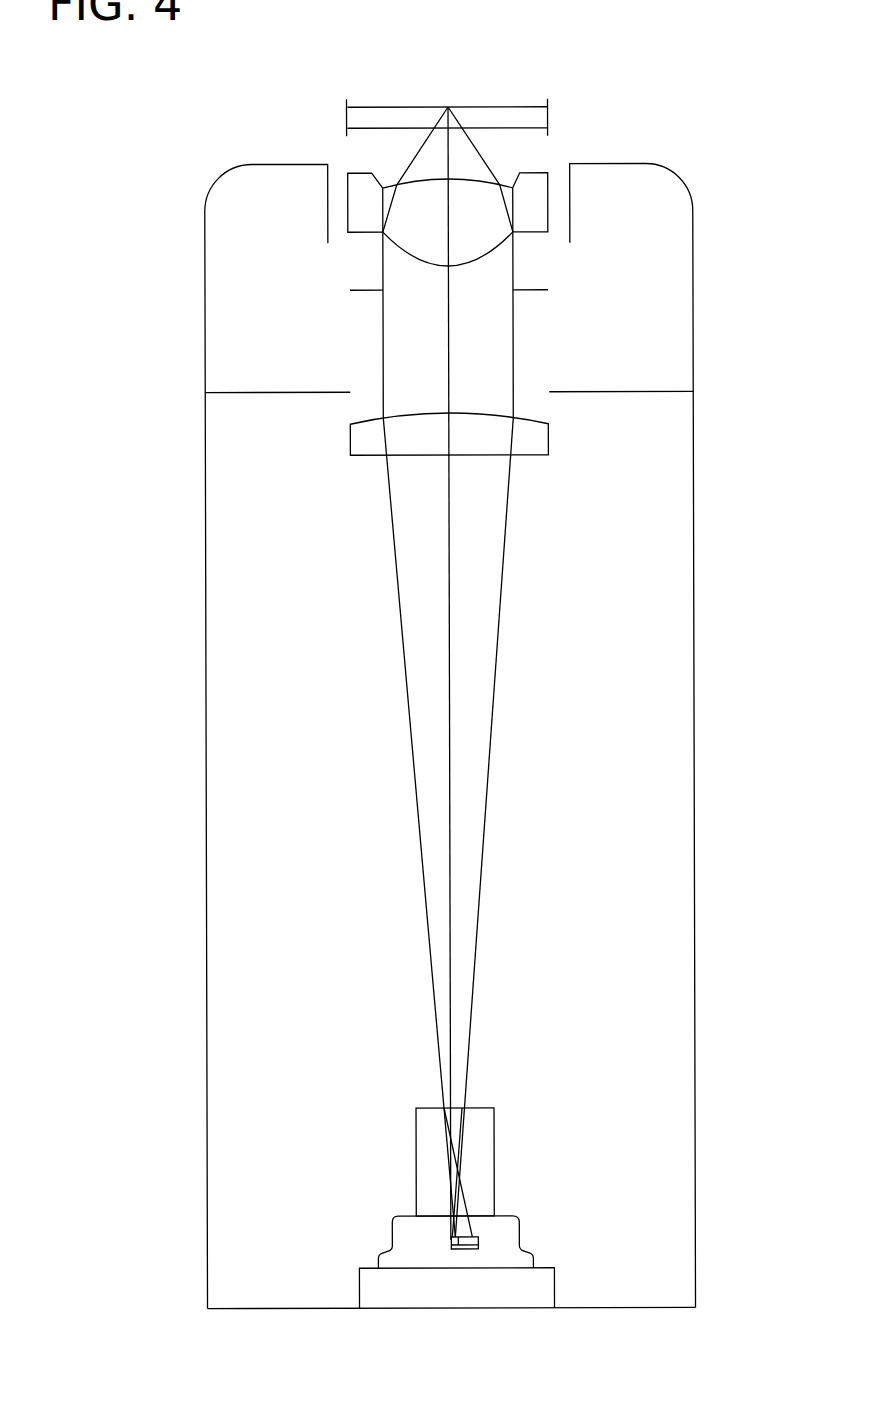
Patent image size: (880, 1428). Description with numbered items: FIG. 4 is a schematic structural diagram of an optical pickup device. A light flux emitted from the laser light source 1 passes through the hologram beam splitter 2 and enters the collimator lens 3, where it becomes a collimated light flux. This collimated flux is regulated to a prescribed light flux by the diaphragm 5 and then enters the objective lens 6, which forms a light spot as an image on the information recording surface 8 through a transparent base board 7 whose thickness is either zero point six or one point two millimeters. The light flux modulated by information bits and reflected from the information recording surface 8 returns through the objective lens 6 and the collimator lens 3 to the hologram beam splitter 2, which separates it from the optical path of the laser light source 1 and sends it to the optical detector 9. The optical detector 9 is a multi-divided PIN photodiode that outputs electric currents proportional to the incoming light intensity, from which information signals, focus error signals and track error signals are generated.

The laser light source 1 is at (450, 1243).
The hologram beam splitter 2 is at (415, 1165).
The collimator lens 3 is at (351, 440).
The diaphragm 5 is at (367, 291).
The objective lens 6 is at (349, 202).
The optical disc 7 is at (350, 115).
The information recording surface 8 is at (379, 106).
The optical detector 9 is at (479, 1240).